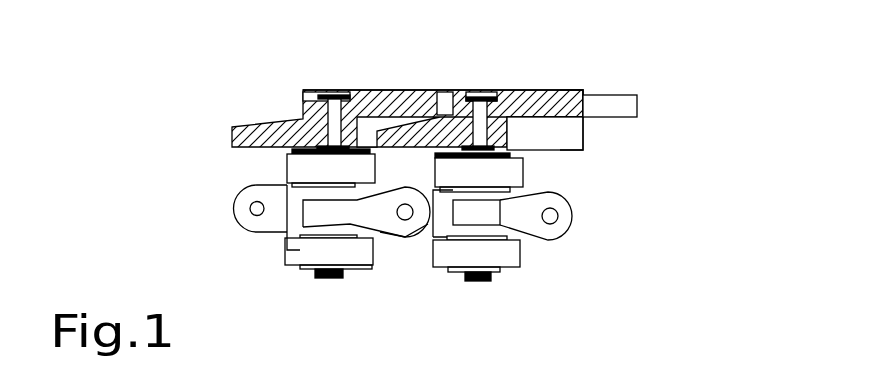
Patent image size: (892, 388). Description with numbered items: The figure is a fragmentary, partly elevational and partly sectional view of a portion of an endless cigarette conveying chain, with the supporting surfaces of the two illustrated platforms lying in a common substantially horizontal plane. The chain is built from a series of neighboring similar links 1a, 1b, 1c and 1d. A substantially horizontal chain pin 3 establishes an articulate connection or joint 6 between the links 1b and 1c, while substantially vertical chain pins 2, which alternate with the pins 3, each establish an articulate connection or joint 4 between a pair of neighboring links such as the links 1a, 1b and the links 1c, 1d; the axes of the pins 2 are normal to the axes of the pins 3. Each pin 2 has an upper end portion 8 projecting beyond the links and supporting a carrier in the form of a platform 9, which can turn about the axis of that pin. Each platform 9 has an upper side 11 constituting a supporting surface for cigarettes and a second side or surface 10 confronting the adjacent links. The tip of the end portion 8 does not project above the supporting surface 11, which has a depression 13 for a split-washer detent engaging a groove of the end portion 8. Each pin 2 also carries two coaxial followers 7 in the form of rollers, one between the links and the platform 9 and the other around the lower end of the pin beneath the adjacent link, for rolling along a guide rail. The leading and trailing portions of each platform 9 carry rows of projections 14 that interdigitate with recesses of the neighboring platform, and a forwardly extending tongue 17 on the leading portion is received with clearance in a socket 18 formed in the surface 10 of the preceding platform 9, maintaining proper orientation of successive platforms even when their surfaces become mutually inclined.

The link 1a is at (240, 222).
The link 1b is at (379, 226).
The link 1c is at (567, 191).
The link 1d is at (567, 238).
The vertical chain pin 2 is at (477, 282).
The horizontal chain pin 3 is at (407, 220).
The articulate connection 4 is at (314, 228).
The articulate connection 6 is at (392, 250).
The follower 7 is at (287, 158).
The upper end portion 8 is at (500, 111).
The platform 9 is at (590, 91).
The second side 10 is at (560, 151).
The upper side 11 is at (506, 89).
The depression 13 is at (462, 91).
The projection 14 is at (637, 108).
The tongue 17 is at (262, 126).
The socket 18 is at (600, 151).